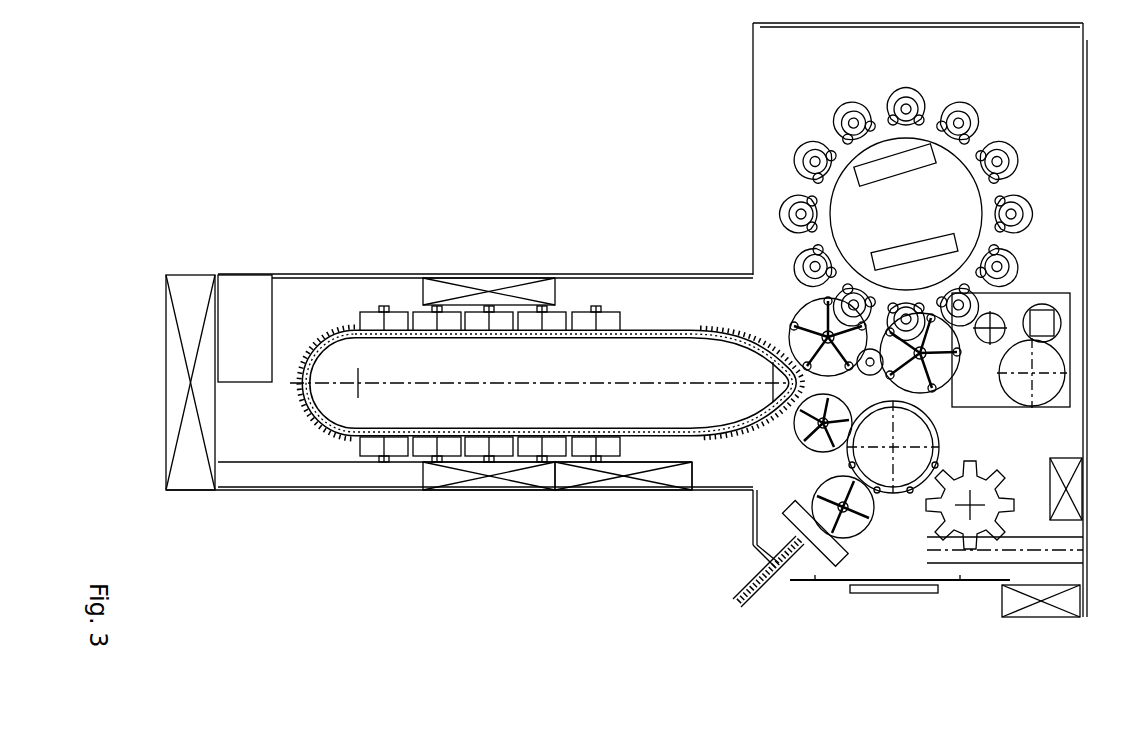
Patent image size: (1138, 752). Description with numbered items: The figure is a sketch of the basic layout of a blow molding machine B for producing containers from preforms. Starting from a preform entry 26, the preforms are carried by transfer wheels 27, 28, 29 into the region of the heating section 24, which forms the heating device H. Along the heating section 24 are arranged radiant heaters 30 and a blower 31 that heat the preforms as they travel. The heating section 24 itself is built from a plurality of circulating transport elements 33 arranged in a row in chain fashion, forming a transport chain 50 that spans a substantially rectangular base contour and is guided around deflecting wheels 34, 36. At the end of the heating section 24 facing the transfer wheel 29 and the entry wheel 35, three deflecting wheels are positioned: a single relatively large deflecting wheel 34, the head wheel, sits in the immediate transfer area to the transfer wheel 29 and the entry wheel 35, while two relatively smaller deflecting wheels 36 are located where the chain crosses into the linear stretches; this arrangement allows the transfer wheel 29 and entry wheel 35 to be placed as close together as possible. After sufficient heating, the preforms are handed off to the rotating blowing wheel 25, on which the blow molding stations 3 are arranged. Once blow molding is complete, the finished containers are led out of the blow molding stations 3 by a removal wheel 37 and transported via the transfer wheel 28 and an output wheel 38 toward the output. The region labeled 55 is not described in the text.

The blow molding station 3 is at (800, 200).
The heating section 24 is at (587, 300).
The blowing wheel 25 is at (857, 153).
The preform entry 26 is at (790, 578).
The transfer wheel 27 is at (855, 538).
The transfer wheel 28 is at (897, 497).
The transfer wheel 29 is at (820, 453).
The radiant heater 30 is at (398, 312).
The blower 31 is at (490, 278).
The transport element 33 is at (335, 428).
The deflecting wheel 34 is at (358, 383).
The entry wheel 35 is at (815, 305).
The deflecting wheel 36 is at (707, 337).
The removal wheel 37 is at (960, 378).
The output wheel 38 is at (978, 517).
The transport chain 50 is at (648, 318).
The housing 55 is at (342, 310).
The blow molding machine B is at (513, 132).
The heating device H is at (433, 180).